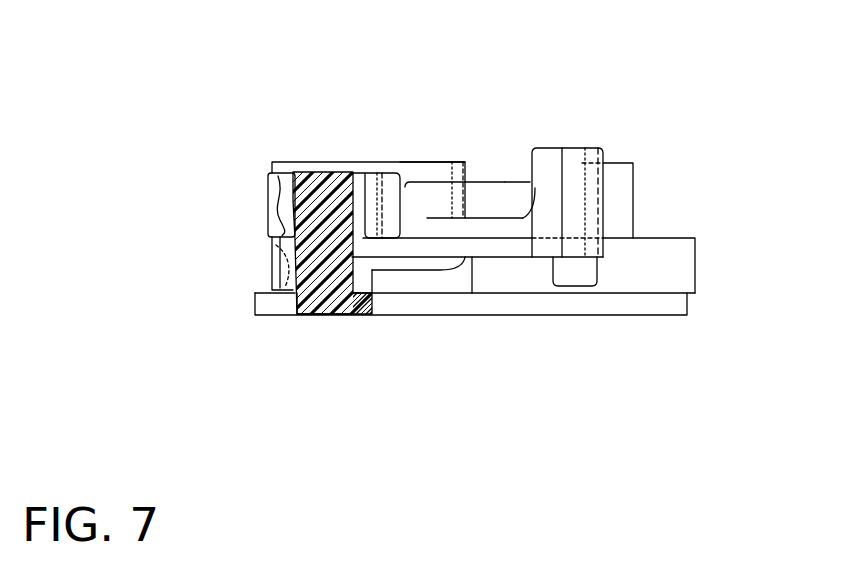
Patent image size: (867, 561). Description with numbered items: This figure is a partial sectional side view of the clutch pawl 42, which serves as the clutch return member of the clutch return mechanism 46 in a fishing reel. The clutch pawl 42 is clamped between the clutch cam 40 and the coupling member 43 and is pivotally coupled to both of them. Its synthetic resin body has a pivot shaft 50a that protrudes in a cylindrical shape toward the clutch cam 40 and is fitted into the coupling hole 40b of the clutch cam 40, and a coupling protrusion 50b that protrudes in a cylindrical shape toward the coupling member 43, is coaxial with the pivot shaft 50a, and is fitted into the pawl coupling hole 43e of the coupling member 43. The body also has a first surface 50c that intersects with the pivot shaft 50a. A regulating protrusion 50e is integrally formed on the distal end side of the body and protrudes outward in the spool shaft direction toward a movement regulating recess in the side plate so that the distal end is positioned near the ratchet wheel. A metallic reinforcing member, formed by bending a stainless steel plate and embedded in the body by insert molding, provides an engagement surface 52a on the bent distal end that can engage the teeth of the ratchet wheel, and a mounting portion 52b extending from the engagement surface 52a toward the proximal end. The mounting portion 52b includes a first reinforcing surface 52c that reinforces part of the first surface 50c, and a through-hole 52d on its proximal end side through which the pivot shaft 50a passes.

The clutch cam 40 is at (355, 155).
The coupling hole 40b is at (268, 228).
The clutch pawl 42 is at (506, 148).
The coupling member 43 is at (456, 326).
The pawl coupling hole 43e is at (272, 262).
The clutch return mechanism 46 is at (624, 144).
The pivot shaft 50a is at (307, 180).
The coupling protrusion 50b is at (320, 314).
The first surface 50c is at (484, 178).
The regulating protrusion 50e is at (582, 273).
The engagement surface 52a is at (586, 146).
The mounting portion 52b is at (524, 262).
The first reinforcing surface 52c is at (533, 237).
The through-hole 52d is at (348, 314).